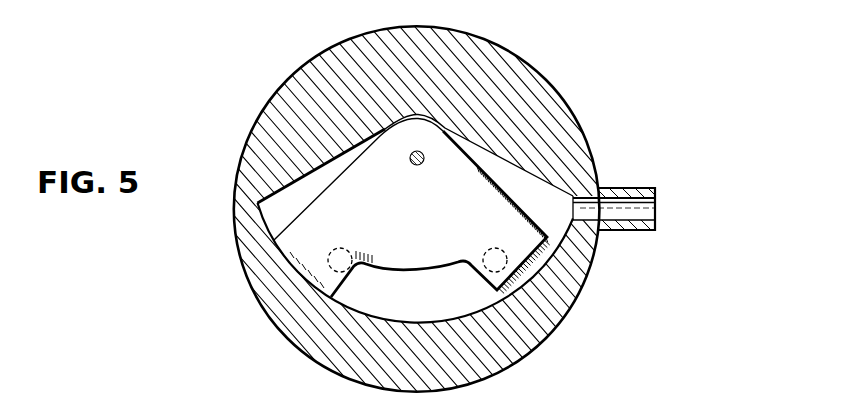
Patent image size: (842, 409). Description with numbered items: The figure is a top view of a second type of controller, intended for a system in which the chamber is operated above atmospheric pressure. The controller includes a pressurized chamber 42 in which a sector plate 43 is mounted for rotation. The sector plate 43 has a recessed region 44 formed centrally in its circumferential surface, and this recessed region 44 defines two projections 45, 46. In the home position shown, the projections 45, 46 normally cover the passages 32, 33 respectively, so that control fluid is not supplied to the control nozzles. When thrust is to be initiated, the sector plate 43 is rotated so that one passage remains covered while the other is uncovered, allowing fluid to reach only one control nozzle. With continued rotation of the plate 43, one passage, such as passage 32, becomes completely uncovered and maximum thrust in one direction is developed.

The pressurized chamber 42 is at (545, 193).
The sector plate 43 is at (413, 167).
The recessed region 44 is at (437, 246).
The projection 45 is at (513, 230).
The projection 46 is at (312, 256).
The passage 33 is at (337, 250).
The passage 32 is at (479, 256).